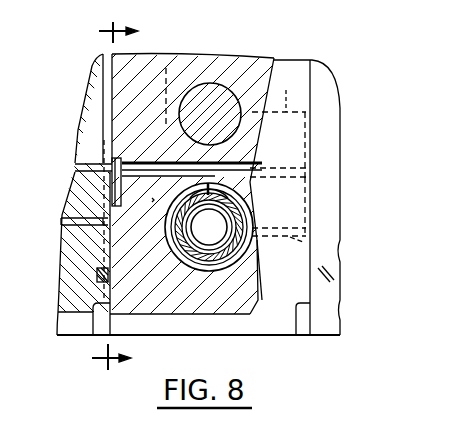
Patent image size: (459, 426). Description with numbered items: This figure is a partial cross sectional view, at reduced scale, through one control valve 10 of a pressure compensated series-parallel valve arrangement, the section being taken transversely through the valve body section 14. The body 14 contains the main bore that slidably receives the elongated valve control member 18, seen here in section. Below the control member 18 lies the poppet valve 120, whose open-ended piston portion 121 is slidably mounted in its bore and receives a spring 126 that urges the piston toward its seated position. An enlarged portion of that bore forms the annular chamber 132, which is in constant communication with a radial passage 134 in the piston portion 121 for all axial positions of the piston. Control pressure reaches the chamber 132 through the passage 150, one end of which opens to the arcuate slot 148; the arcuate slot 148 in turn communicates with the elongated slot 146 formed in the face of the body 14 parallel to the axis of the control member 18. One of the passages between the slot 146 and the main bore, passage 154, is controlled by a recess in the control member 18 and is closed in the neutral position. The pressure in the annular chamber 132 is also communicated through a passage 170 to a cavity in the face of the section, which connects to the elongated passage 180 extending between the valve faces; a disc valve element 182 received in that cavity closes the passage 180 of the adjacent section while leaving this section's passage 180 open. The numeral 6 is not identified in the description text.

The spindle head 6 is at (5, 104).
The control valve 10 is at (125, 196).
The valve body section 14 is at (175, 67).
The valve control member 18 is at (232, 76).
The poppet valve 120 is at (193, 280).
The piston portion 121 is at (185, 247).
The spring 126 is at (228, 218).
The annular chamber 132 is at (236, 263).
The radial passage 134 is at (252, 183).
The elongated slot 146 is at (302, 112).
The arcuate slot 148 is at (306, 192).
The passage 150 is at (302, 247).
The passage 154 is at (279, 125).
The passage 170 is at (152, 202).
The elongated passage 180 is at (141, 163).
The disc valve element 182 is at (112, 183).